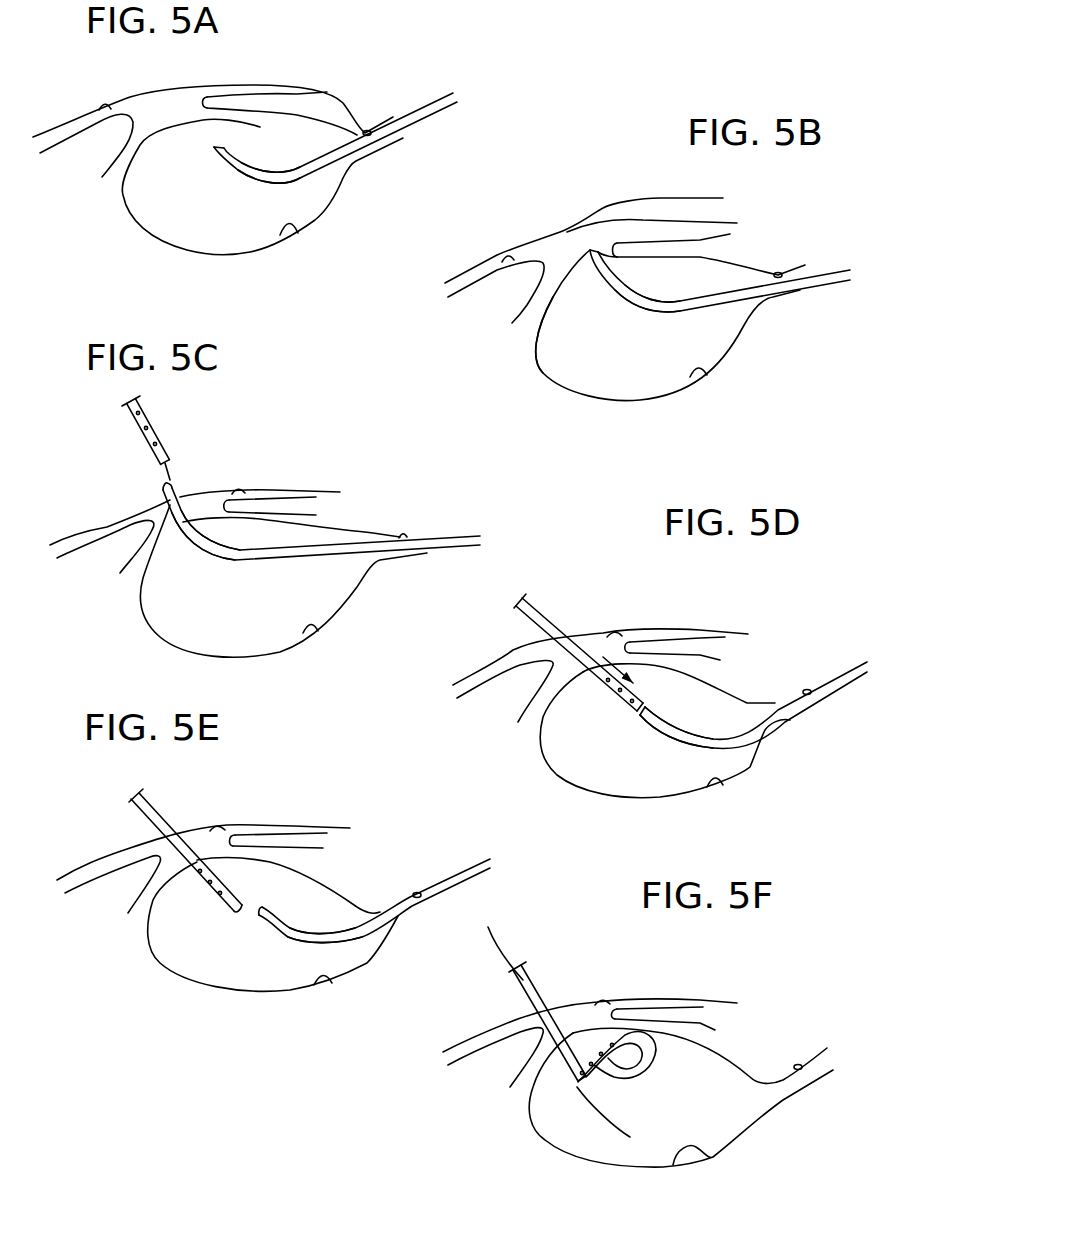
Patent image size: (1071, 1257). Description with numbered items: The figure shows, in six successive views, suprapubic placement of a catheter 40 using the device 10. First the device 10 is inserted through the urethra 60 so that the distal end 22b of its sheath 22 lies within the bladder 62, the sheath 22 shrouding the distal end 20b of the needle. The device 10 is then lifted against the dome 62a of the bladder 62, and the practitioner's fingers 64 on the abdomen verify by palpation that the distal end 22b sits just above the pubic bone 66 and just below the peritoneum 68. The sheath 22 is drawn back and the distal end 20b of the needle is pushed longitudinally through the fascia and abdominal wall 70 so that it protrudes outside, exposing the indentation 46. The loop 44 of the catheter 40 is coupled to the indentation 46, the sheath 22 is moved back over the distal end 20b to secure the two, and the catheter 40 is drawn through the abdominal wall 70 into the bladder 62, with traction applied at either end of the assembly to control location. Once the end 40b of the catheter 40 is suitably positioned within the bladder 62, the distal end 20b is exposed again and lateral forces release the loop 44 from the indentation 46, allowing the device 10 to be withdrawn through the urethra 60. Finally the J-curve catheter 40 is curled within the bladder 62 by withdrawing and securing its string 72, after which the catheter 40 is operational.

In FIG. 5A, the device 10 is at (309, 190).
In FIG. 5B, the device 10 is at (711, 318).
In FIG. 5C, the device 10 is at (323, 575).
In FIG. 5D, the device 10 is at (733, 750).
In FIG. 5E, the device 10 is at (341, 945).
In FIG. 5A, the sheath 22 is at (266, 189).
In FIG. 5B, the sheath 22 is at (670, 312).
In FIG. 5C, the sheath 22 is at (178, 524).
In FIG. 5D, the sheath 22 is at (676, 742).
In FIG. 5E, the sheath 22 is at (296, 944).
In FIG. 5A, the distal end of sheath 22b is at (213, 147).
In FIG. 5B, the distal end of sheath 22b is at (592, 258).
In FIG. 5C, the distal end of sheath 22b is at (170, 500).
In FIG. 5D, the distal end of sheath 22b is at (647, 717).
In FIG. 5E, the distal end of sheath 22b is at (273, 923).
In FIG. 5C, the distal end of needle 20b is at (164, 486).
In FIG. 5E, the distal end of needle 20b is at (258, 912).
In FIG. 5C, the catheter 40 is at (147, 402).
In FIG. 5D, the catheter 40 is at (550, 607).
In FIG. 5E, the catheter 40 is at (153, 802).
In FIG. 5F, the catheter 40 is at (537, 977).
In FIG. 5D, the end of catheter 40b is at (645, 701).
In FIG. 5E, the end of catheter 40b is at (245, 899).
In FIG. 5F, the end of catheter 40b is at (587, 1084).
In FIG. 5C, the loop 44 is at (157, 462).
In FIG. 5F, the loop 44 is at (630, 1137).
In FIG. 5C, the indentation 46 is at (180, 477).
In FIG. 5E, the indentation 46 is at (273, 908).
In FIG. 5A, the urethra 60 is at (367, 130).
In FIG. 5B, the urethra 60 is at (778, 274).
In FIG. 5C, the urethra 60 is at (405, 533).
In FIG. 5D, the urethra 60 is at (808, 690).
In FIG. 5E, the urethra 60 is at (417, 893).
In FIG. 5F, the urethra 60 is at (799, 1065).
In FIG. 5A, the bladder 62 is at (289, 236).
In FIG. 5B, the bladder 62 is at (697, 378).
In FIG. 5C, the bladder 62 is at (309, 635).
In FIG. 5D, the bladder 62 is at (713, 788).
In FIG. 5E, the bladder 62 is at (317, 985).
In FIG. 5F, the bladder 62 is at (681, 1115).
In FIG. 5B, the dome of bladder 62a is at (532, 340).
In FIG. 5B, the fingers 64 is at (588, 222).
In FIG. 5A, the pubic bone 66 is at (253, 100).
In FIG. 5B, the pubic bone 66 is at (700, 243).
In FIG. 5C, the pubic bone 66 is at (270, 503).
In FIG. 5D, the pubic bone 66 is at (663, 645).
In FIG. 5E, the pubic bone 66 is at (273, 840).
In FIG. 5F, the pubic bone 66 is at (657, 1012).
In FIG. 5A, the peritoneum 68 is at (97, 140).
In FIG. 5B, the peritoneum 68 is at (497, 290).
In FIG. 5C, the peritoneum 68 is at (110, 545).
In FIG. 5D, the peritoneum 68 is at (510, 692).
In FIG. 5E, the peritoneum 68 is at (115, 883).
In FIG. 5F, the peritoneum 68 is at (500, 1057).
In FIG. 5A, the abdominal wall 70 is at (105, 107).
In FIG. 5B, the abdominal wall 70 is at (508, 258).
In FIG. 5C, the abdominal wall 70 is at (240, 490).
In FIG. 5D, the abdominal wall 70 is at (627, 638).
In FIG. 5E, the abdominal wall 70 is at (233, 830).
In FIG. 5F, the abdominal wall 70 is at (620, 1000).
In FIG. 5F, the string 72 is at (505, 942).